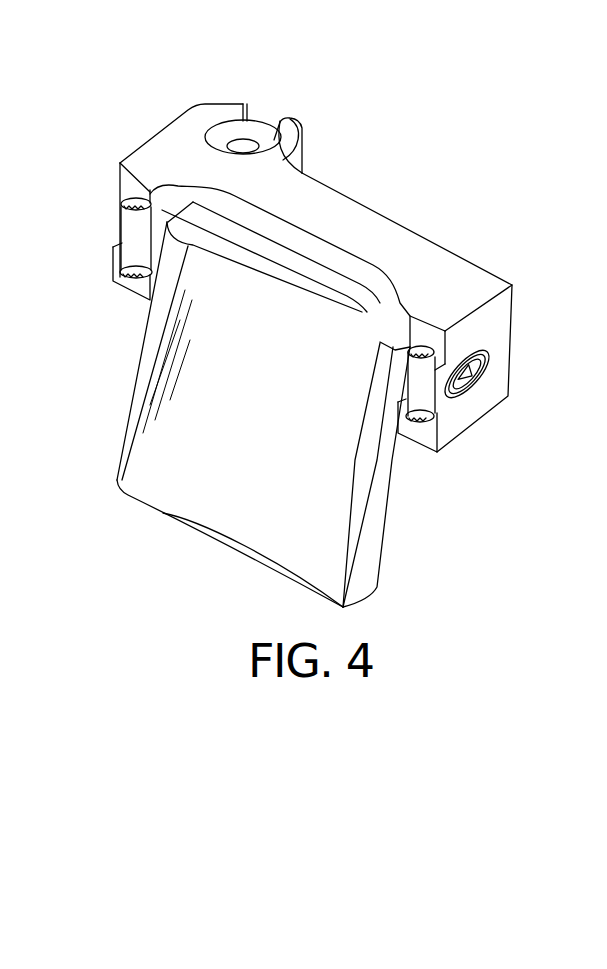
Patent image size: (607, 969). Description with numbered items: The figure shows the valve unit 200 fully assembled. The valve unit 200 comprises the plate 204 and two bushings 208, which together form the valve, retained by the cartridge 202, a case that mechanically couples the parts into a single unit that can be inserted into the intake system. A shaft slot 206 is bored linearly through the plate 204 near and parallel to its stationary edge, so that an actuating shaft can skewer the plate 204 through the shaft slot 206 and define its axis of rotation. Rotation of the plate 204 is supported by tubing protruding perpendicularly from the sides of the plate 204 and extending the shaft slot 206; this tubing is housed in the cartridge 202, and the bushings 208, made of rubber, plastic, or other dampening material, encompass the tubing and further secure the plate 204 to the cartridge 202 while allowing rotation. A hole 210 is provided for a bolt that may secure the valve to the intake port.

The valve unit 200 is at (304, 314).
The cartridge 202 is at (470, 300).
The plate 204 is at (280, 426).
The shaft slot 206 is at (497, 389).
The bushings 208 is at (97, 221).
The hole 210 is at (282, 98).